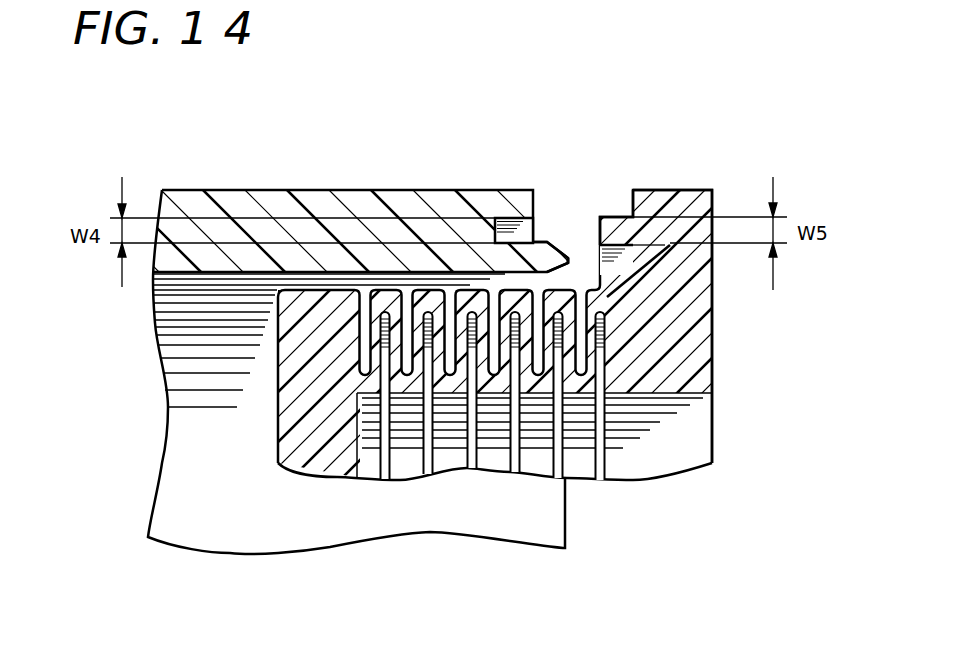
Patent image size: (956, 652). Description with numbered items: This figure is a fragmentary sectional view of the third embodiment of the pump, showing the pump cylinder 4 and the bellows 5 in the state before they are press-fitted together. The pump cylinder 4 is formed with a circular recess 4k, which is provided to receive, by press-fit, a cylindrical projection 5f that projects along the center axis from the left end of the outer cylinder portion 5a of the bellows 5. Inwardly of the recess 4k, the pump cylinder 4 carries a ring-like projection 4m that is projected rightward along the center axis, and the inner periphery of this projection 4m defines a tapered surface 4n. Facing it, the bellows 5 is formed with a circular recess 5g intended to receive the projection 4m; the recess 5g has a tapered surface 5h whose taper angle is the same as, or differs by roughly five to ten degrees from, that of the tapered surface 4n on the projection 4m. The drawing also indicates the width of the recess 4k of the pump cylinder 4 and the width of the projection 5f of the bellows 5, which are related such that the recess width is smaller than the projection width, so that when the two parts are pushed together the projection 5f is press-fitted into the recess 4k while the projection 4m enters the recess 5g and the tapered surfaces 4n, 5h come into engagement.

The pump cylinder 4 is at (354, 195).
The circular recess 4k is at (503, 217).
The ring-like projection 4m is at (566, 258).
The tapered surface 4n is at (580, 272).
The bellows 5 is at (322, 477).
The cylindrical projection 5f is at (607, 213).
The circular recess 5g is at (645, 240).
The outer cylinder portion 5a is at (717, 195).
The tapered surface 5h is at (622, 263).